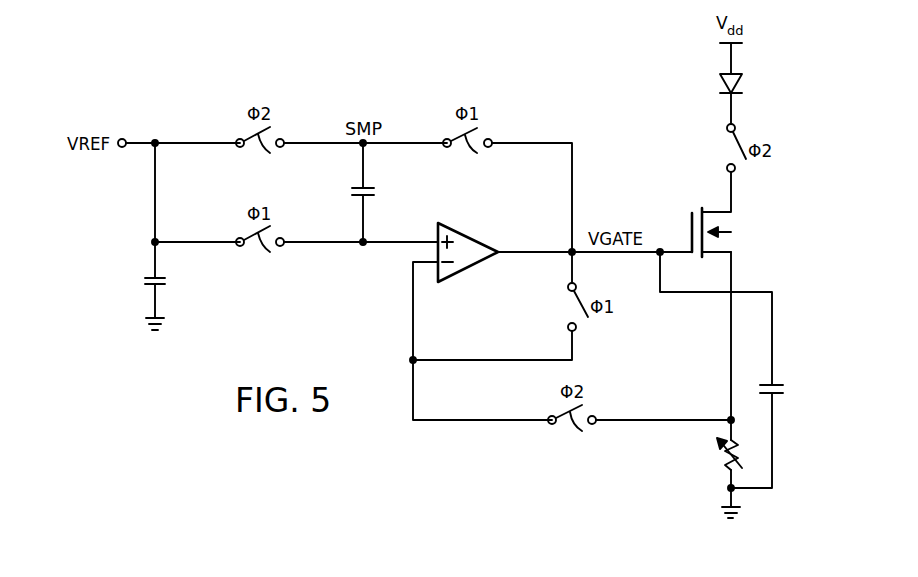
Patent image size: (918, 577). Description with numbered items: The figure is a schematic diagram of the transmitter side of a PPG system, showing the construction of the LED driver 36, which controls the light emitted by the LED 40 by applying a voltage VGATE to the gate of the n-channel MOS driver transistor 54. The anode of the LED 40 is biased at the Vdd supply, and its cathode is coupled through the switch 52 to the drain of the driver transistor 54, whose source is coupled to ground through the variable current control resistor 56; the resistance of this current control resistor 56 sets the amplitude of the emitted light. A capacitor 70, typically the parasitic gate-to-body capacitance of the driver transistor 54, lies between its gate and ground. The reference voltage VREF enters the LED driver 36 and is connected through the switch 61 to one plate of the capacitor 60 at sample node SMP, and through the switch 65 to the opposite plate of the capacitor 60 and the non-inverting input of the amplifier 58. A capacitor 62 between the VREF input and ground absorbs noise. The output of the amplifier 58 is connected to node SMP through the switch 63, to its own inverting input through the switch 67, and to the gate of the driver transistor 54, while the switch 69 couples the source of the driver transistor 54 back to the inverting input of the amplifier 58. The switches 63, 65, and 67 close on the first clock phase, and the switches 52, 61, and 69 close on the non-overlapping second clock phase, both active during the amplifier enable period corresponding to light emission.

The LED driver 36 is at (204, 62).
The LED 40 is at (742, 88).
The switch 52 is at (733, 144).
The driver transistor 54 is at (690, 219).
The variable current control resistor 56 is at (723, 458).
The amplifier 58 is at (471, 234).
The capacitor 60 is at (352, 192).
The switch 61 is at (260, 156).
The capacitor 62 is at (141, 282).
The switch 63 is at (468, 157).
The switch 65 is at (260, 255).
The switch 67 is at (576, 304).
The switch 69 is at (572, 434).
The capacitor 70 is at (784, 390).